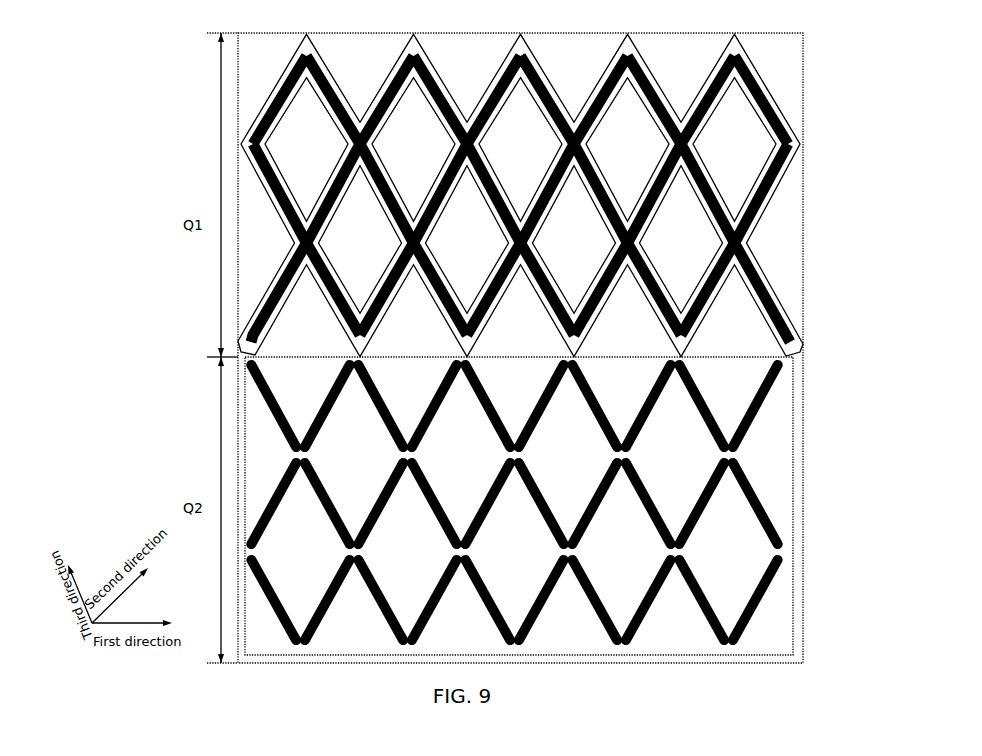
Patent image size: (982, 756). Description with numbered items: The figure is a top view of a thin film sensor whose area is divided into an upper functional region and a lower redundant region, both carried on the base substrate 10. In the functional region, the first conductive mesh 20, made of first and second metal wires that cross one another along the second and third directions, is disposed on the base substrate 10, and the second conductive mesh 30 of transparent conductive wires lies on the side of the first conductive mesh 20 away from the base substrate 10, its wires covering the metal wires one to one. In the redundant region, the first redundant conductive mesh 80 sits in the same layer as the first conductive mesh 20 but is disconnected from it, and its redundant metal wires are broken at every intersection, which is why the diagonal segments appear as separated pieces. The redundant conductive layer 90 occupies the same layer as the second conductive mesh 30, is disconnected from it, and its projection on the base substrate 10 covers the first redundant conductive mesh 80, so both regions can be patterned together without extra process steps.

The base substrate 10 is at (790, 253).
The first conductive mesh 20 is at (785, 315).
The second conductive mesh 30 is at (797, 337).
The first redundant conductive mesh 80 is at (767, 393).
The redundant conductive layer 90 is at (768, 453).